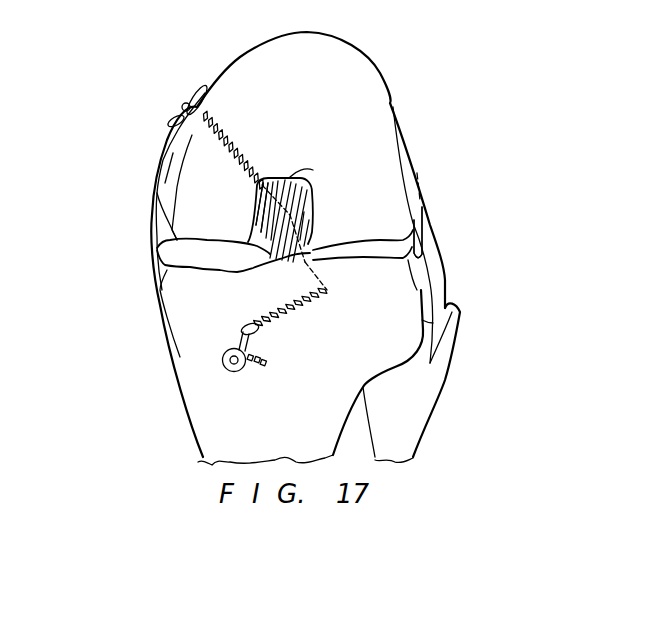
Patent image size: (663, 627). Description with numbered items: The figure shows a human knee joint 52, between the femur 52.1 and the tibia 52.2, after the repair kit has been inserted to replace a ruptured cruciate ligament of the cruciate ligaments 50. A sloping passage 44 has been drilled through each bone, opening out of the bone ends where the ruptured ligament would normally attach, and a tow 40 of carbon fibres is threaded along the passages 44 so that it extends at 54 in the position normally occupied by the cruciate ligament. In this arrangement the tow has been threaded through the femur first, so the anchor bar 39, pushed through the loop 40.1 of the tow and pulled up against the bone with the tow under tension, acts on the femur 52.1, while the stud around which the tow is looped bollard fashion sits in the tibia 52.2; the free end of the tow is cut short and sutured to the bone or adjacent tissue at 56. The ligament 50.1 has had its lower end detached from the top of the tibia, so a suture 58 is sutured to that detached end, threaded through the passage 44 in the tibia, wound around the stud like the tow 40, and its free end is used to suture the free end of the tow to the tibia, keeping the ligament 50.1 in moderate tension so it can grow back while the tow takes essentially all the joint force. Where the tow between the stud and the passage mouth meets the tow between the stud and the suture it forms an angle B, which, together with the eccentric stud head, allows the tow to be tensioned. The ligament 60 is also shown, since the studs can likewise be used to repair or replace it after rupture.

The anchor bar 39 is at (198, 84).
The tow 40 is at (228, 150).
The loop 40.1 is at (180, 105).
The sloping passage 44 is at (237, 333).
The cruciate ligaments 50 is at (312, 227).
The ligament 50.1 is at (260, 205).
The knee joint 52 is at (504, 159).
The femur 52.1 is at (367, 90).
The tibia 52.2 is at (397, 294).
The position normally occupied by the cruciate ligament 54 is at (297, 198).
The suturing of the free end of the tow 56 is at (262, 374).
The suture 58 is at (290, 267).
The ligament 60 is at (443, 257).
The angle B is at (255, 352).